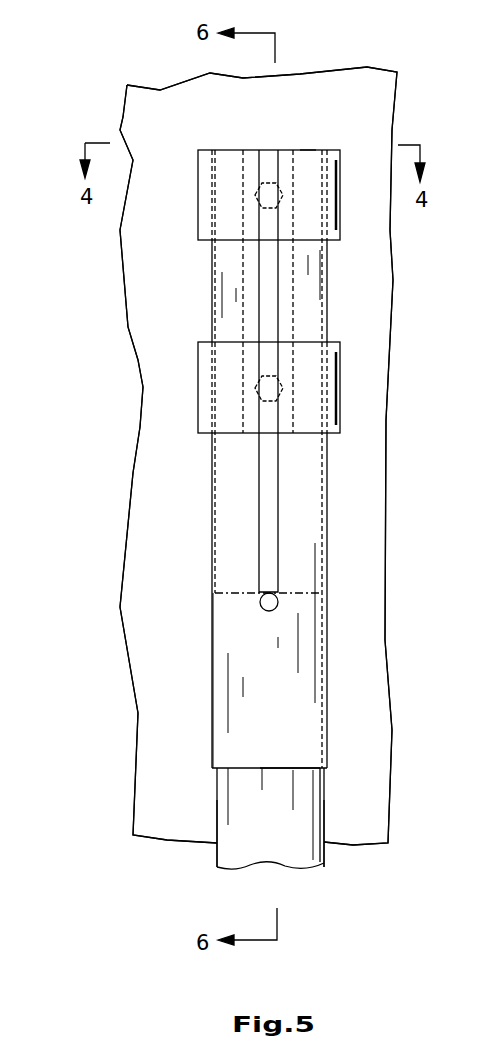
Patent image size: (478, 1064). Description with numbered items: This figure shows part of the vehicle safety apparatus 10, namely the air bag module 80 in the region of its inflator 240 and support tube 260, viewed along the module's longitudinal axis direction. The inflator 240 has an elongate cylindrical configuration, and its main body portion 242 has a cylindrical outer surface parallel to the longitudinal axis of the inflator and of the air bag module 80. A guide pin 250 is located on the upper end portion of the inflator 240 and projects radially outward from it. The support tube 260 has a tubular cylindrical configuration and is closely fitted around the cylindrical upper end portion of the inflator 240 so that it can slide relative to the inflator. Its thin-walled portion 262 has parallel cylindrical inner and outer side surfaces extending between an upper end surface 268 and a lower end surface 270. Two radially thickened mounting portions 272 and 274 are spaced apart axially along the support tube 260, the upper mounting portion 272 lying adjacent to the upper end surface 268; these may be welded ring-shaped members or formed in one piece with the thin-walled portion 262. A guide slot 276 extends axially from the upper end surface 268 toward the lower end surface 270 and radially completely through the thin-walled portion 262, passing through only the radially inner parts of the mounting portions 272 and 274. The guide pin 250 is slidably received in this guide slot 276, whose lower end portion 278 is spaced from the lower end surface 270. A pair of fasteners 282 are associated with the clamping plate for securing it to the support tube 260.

The vehicle safety apparatus 10 is at (105, 391).
The air bag module 80 is at (112, 473).
The inflator 240 is at (205, 857).
The main body portion 242 is at (327, 853).
The guide pin 250 is at (279, 601).
The support tube 260 is at (200, 648).
The thin-walled portion 262 is at (212, 513).
The upper end surface 268 is at (308, 148).
The lower end surface 270 is at (287, 768).
The upper mounting portion 272 is at (198, 195).
The lower mounting portion 274 is at (198, 387).
The guide slot 276 is at (280, 496).
The lower end portion 278 is at (259, 578).
The fasteners 282 is at (272, 196).